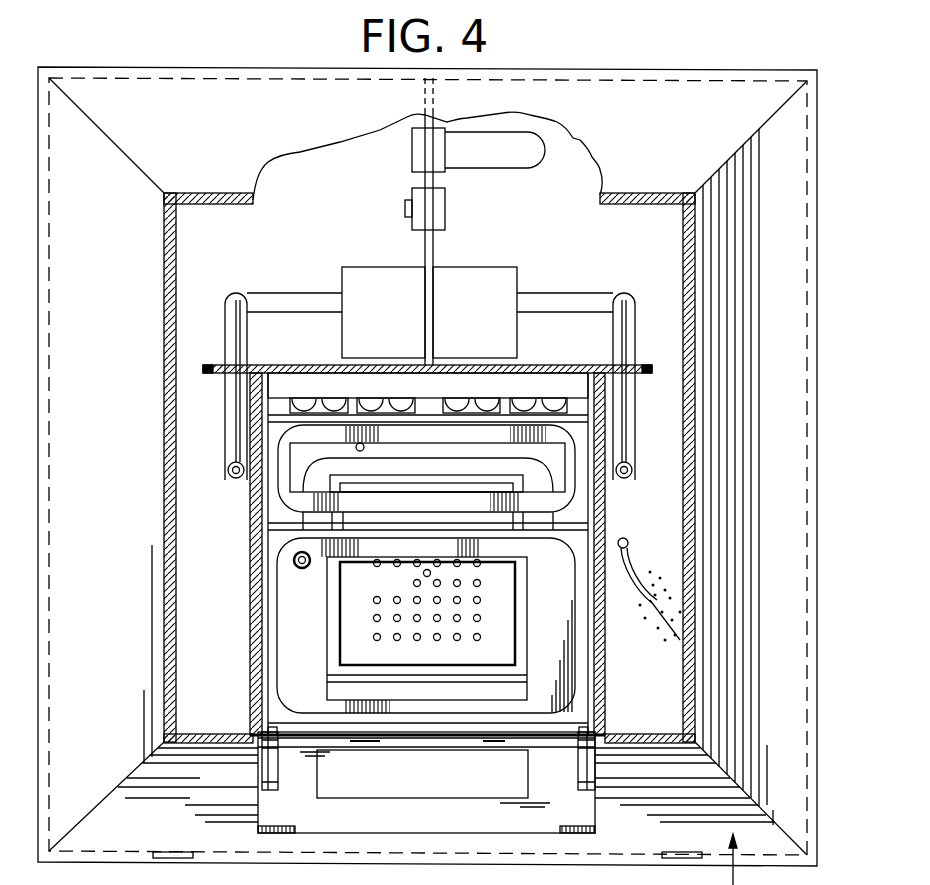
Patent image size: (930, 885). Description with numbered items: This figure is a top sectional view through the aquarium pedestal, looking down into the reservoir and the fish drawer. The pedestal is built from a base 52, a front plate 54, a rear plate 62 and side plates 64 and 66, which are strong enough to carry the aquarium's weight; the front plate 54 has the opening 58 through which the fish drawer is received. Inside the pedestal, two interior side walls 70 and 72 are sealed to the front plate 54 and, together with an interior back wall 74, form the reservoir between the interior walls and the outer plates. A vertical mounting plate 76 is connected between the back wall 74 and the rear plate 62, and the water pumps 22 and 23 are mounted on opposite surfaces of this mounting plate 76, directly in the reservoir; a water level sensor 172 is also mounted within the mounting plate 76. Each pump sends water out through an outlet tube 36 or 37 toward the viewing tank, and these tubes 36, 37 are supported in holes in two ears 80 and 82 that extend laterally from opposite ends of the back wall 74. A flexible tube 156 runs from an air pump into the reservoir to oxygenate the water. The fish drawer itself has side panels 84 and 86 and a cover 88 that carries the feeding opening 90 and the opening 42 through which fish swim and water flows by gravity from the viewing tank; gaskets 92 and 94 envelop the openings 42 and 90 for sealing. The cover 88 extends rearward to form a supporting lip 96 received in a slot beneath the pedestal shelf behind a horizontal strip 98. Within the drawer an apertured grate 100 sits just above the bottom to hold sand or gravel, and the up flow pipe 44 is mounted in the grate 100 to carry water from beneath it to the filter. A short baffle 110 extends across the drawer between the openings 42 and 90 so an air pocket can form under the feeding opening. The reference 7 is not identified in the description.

The oven 7 is at (268, 341).
The water pump 22 is at (352, 273).
The water pump 23 is at (510, 282).
The outlet tube 36 is at (258, 298).
The outlet tube 37 is at (592, 300).
The opening 42 is at (360, 443).
The up flow pipe 44 is at (302, 569).
The base 52 is at (653, 213).
The front plate 54 is at (88, 848).
The opening 58 is at (272, 802).
The rear plate 62 is at (656, 95).
The side plate 64 is at (60, 548).
The side plate 66 is at (790, 513).
The interior side wall 70 is at (250, 537).
The interior side wall 72 is at (597, 506).
The interior back wall 74 is at (322, 366).
The vertical mounting plate 76 is at (433, 248).
The ear 80 is at (208, 366).
The ear 82 is at (642, 368).
The side panel 84 is at (263, 640).
The side panel 86 is at (590, 683).
The cover 88 is at (567, 720).
The feeding opening 90 is at (287, 685).
The gasket 92 is at (480, 503).
The gasket 94 is at (585, 636).
The supporting lip 96 is at (270, 389).
The horizontal strip 98 is at (547, 383).
The apertured grate 100 is at (353, 645).
The baffle 110 is at (365, 553).
The flexible tube 156 is at (635, 568).
The water level sensor 172 is at (405, 207).